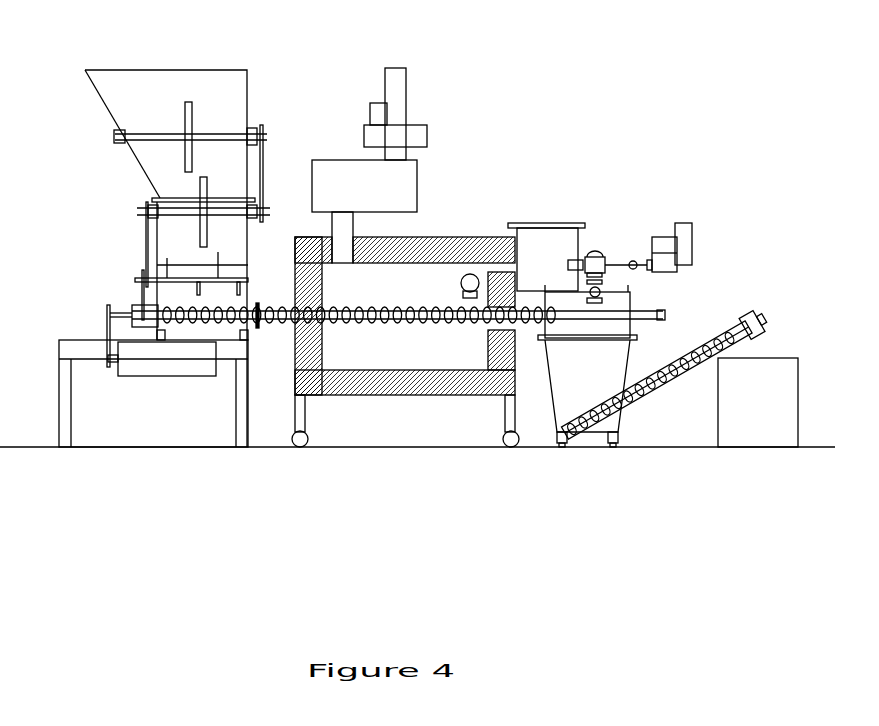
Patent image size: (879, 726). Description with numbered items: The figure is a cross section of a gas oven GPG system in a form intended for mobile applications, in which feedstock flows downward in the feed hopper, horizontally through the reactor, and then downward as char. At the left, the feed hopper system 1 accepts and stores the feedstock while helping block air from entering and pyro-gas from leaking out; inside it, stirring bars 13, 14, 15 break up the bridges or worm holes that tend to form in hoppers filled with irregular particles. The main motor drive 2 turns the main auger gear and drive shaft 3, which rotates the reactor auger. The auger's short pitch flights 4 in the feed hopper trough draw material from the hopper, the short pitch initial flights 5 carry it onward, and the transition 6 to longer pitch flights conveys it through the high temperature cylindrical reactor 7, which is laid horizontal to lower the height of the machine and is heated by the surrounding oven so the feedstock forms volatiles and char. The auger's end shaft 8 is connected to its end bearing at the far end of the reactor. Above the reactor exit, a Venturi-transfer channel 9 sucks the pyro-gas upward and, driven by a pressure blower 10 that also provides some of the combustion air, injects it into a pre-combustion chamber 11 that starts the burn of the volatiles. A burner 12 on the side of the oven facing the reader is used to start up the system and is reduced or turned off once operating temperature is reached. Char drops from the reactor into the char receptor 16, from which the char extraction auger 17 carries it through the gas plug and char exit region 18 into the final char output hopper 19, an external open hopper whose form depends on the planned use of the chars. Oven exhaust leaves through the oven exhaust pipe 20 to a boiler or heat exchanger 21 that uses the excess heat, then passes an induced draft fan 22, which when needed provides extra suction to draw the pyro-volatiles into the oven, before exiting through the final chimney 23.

The feed hopper system 1 is at (85, 70).
The main motor drive 2 is at (180, 376).
The main auger gear and drive shaft 3 is at (107, 305).
The reactor auger short pitch flights in the feed hopper trough 4 is at (218, 307).
The short pitch initial flights of the reactor auger 5 is at (295, 288).
The transition to longer pitch flights of the reactor auger 6 is at (405, 308).
The high temperature cylindrical reactor 7 is at (443, 327).
The reactor auger end shaft 8 is at (590, 312).
The Venturi-transfer channel 9 is at (595, 255).
The pressure blower 10 is at (685, 228).
The pre-combustion chamber 11 is at (550, 238).
The burner 12 is at (466, 272).
The stirring bar 13 is at (160, 247).
The stirring bar 14 is at (205, 190).
The stirring bar 15 is at (182, 130).
The char receptor 16 is at (627, 358).
The char extraction auger 17 is at (700, 365).
The gas plug and char exit region 18 is at (738, 338).
The final char output hopper 19 is at (768, 398).
The oven exhaust pipe 20 is at (343, 217).
The boiler or heat exchanger 21 is at (397, 190).
The induced draft fan 22 is at (400, 133).
The chimney 23 is at (397, 80).